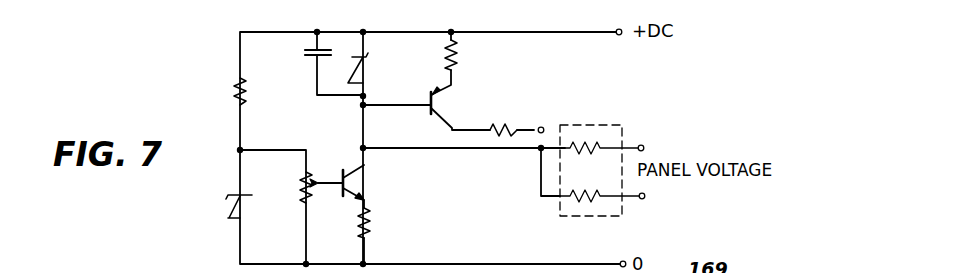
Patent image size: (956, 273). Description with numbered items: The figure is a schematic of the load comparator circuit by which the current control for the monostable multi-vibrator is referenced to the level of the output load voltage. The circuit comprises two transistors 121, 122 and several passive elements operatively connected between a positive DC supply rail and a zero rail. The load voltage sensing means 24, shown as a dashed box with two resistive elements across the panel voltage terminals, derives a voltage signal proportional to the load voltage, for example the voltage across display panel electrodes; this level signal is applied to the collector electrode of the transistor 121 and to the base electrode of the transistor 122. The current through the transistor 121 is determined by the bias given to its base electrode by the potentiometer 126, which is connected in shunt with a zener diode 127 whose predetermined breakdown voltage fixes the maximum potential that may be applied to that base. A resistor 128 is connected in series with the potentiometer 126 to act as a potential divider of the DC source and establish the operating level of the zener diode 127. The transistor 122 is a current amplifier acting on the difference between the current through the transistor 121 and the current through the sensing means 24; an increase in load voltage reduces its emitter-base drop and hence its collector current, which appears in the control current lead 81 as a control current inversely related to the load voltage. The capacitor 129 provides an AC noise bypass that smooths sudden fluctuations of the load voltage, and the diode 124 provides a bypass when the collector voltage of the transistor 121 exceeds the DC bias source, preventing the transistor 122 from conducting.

The capacitor 129 is at (313, 46).
The diode 124 is at (365, 70).
The control current lead 81 is at (455, 53).
The transistor 122 is at (440, 102).
The resistor 128 is at (232, 83).
The zener diode 127 is at (232, 201).
The potentiometer 126 is at (303, 177).
The transistor 121 is at (352, 180).
The load voltage sensing means 24 is at (590, 122).